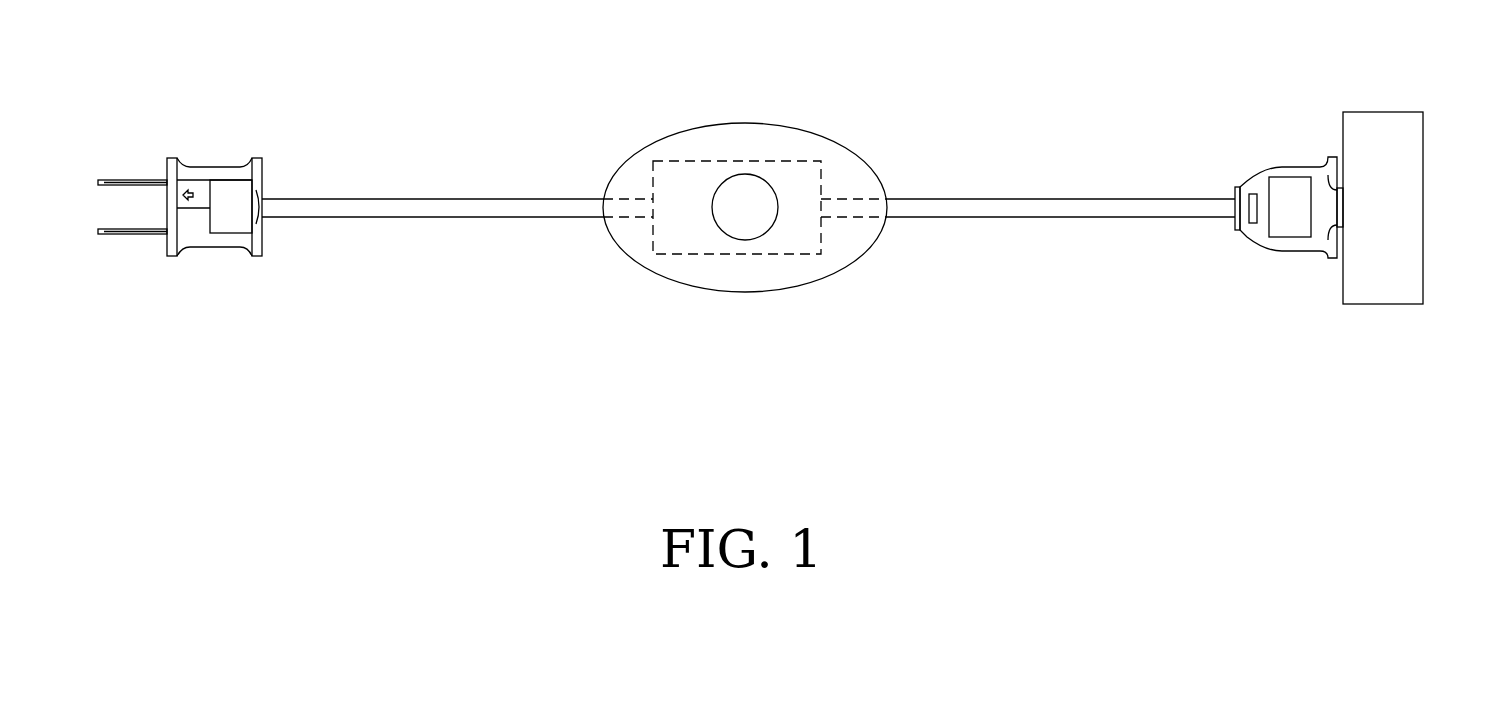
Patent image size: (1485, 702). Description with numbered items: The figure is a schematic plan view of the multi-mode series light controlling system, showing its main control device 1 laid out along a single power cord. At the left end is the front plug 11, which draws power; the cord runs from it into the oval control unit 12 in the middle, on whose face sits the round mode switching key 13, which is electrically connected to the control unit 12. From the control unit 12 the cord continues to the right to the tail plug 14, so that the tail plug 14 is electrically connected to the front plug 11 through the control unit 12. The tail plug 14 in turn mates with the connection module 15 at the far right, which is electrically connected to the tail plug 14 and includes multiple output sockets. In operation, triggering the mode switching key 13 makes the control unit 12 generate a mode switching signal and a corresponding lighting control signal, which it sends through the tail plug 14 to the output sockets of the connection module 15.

The main control device 1 is at (840, 108).
The front plug 11 is at (207, 165).
The control unit 12 is at (673, 256).
The mode switching key 13 is at (773, 228).
The tail plug 14 is at (1270, 168).
The connection module 15 is at (1397, 112).